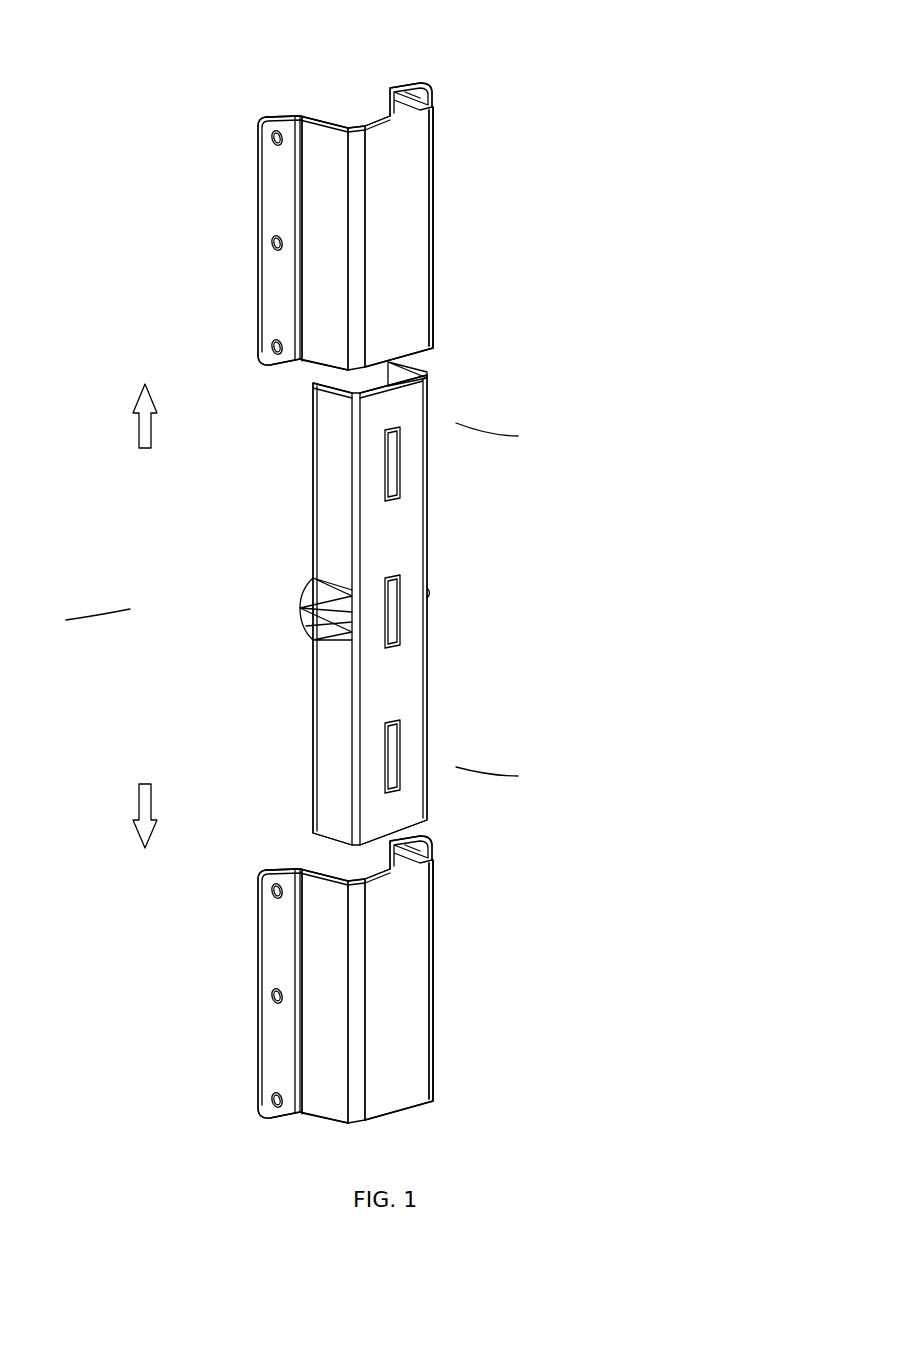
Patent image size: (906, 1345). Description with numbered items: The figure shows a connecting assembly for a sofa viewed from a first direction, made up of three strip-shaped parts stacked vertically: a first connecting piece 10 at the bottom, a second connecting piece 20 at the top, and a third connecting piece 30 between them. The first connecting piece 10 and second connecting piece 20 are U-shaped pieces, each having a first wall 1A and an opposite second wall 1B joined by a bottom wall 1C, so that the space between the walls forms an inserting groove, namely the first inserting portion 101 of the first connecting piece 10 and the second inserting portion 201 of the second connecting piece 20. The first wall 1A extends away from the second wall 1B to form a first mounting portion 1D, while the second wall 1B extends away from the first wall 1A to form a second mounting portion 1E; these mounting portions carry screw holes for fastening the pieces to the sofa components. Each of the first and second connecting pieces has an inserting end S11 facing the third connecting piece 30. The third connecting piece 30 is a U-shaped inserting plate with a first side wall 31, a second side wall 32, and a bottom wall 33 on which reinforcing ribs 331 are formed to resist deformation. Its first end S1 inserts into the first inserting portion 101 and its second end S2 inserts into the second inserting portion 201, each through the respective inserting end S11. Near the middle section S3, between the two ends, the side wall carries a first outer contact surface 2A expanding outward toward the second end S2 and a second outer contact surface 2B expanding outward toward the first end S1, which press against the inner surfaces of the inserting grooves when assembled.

The first connecting piece 10 is at (552, 1005).
The second connecting piece 20 is at (552, 266).
The third connecting piece 30 is at (698, 598).
The first inserting portion 101 is at (404, 859).
The second inserting portion 201 is at (352, 100).
The first wall 1A is at (320, 270).
The second wall 1B is at (402, 104).
The bottom wall 1C is at (420, 262).
The first mounting portion 1D is at (280, 207).
The second mounting portion 1E is at (408, 92).
The first outer contact surface 2A is at (305, 628).
The second outer contact surface 2B is at (306, 600).
The first side wall 31 is at (316, 493).
The second side wall 32 is at (420, 375).
The bottom wall 33 is at (418, 516).
The reinforcing ribs 331 is at (401, 612).
The first end S1 is at (456, 767).
The second end S2 is at (456, 423).
The middle section S3 is at (130, 609).
The inserting end S11 is at (288, 385).